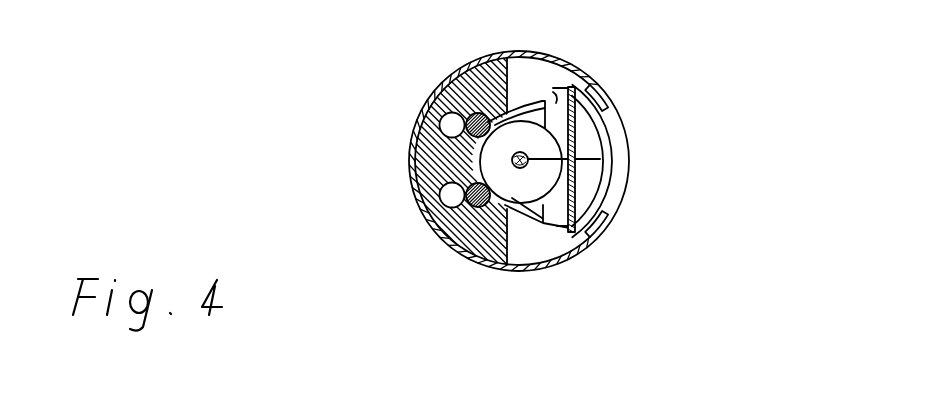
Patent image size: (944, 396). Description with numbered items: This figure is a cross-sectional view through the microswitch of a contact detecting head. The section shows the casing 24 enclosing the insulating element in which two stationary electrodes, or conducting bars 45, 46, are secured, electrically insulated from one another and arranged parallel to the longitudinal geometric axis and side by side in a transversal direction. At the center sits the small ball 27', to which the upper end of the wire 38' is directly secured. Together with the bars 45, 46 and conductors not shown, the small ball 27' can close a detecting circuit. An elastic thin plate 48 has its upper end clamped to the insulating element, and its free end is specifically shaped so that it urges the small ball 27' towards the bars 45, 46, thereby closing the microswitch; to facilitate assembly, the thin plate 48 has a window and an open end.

The housing / outer sleeve 24 is at (425, 137).
The stationary electrode 46 is at (458, 85).
The small ball 27' is at (670, 168).
The wire 38' is at (686, 138).
The stationary electrode 45 is at (507, 228).
The elastic thin plate 48 is at (556, 90).